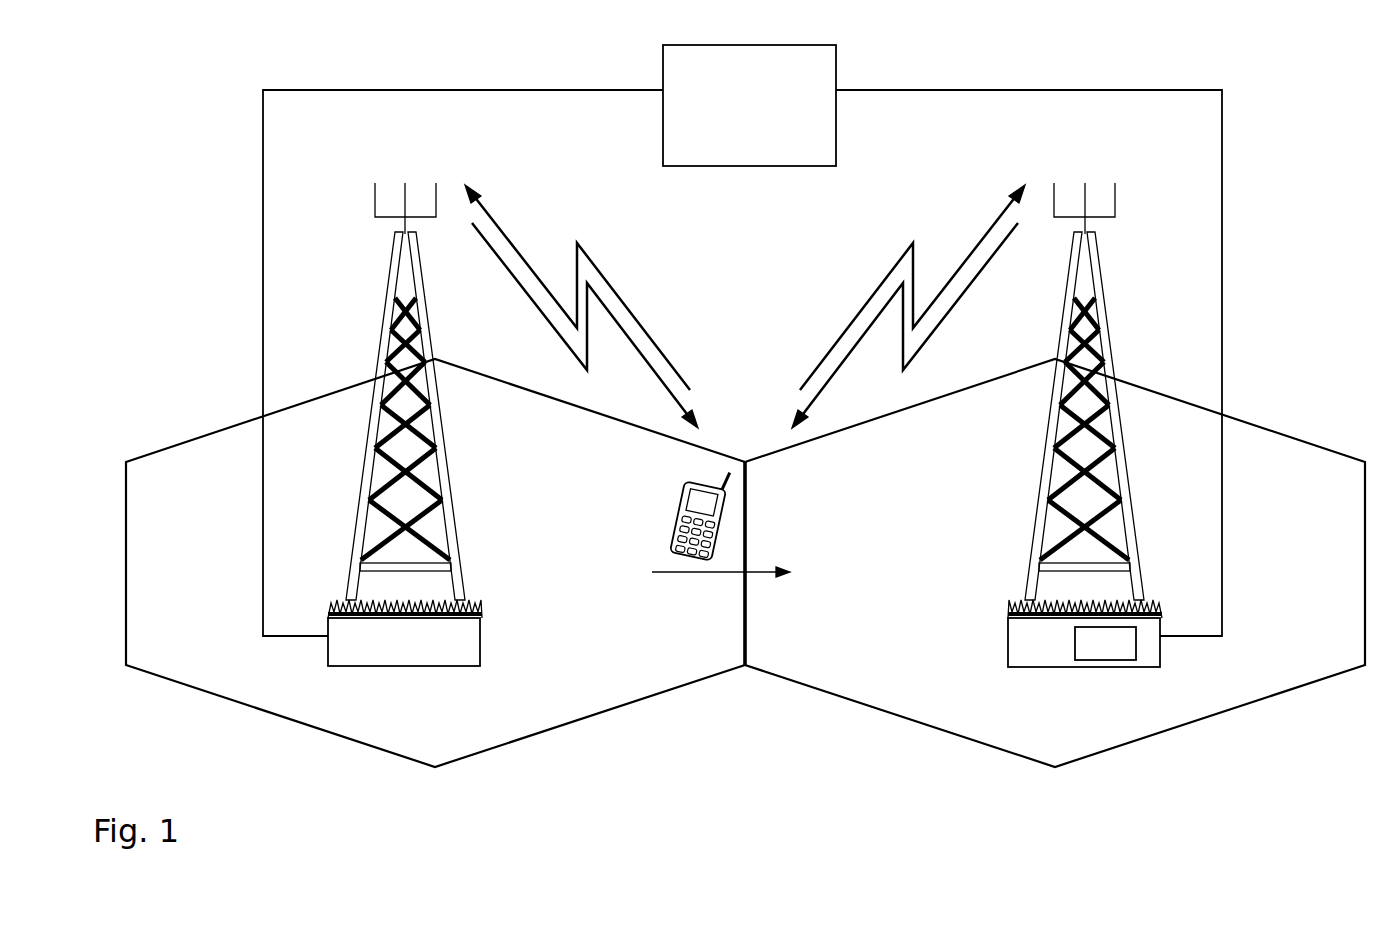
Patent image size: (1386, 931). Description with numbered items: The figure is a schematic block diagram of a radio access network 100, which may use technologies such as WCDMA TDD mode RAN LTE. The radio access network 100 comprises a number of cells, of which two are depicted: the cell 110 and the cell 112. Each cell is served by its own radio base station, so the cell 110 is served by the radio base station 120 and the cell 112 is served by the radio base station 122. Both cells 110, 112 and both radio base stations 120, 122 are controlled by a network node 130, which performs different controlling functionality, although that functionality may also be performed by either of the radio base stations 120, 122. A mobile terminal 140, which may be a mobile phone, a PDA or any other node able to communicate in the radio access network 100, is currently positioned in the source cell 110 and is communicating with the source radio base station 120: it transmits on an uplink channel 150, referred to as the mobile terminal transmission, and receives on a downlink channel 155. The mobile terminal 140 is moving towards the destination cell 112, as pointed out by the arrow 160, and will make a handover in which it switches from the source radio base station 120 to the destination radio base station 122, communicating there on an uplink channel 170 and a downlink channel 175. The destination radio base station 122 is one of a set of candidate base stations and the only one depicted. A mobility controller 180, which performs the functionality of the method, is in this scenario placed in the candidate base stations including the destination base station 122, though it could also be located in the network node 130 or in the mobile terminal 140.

The radio access network 100 is at (759, 752).
The cell 110 is at (245, 683).
The cell 112 is at (1285, 660).
The radio base station 120 is at (405, 424).
The radio base station 122 is at (1023, 648).
The network node 130 is at (742, 340).
The mobile terminal 140 is at (681, 492).
The uplink channel 150 is at (530, 222).
The downlink channel 155 is at (520, 290).
The arrow 160 is at (712, 575).
The uplink channel 170 is at (963, 252).
The downlink channel 175 is at (983, 322).
The mobility controller 180 is at (1120, 643).